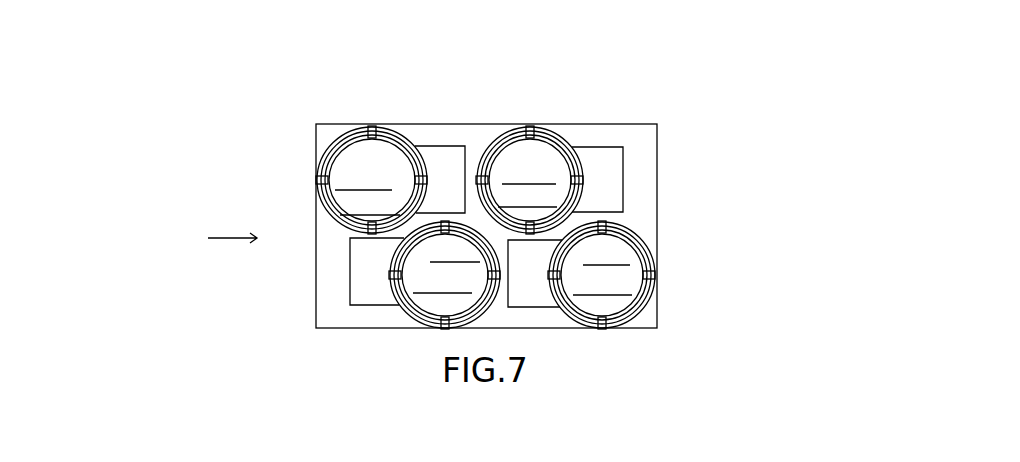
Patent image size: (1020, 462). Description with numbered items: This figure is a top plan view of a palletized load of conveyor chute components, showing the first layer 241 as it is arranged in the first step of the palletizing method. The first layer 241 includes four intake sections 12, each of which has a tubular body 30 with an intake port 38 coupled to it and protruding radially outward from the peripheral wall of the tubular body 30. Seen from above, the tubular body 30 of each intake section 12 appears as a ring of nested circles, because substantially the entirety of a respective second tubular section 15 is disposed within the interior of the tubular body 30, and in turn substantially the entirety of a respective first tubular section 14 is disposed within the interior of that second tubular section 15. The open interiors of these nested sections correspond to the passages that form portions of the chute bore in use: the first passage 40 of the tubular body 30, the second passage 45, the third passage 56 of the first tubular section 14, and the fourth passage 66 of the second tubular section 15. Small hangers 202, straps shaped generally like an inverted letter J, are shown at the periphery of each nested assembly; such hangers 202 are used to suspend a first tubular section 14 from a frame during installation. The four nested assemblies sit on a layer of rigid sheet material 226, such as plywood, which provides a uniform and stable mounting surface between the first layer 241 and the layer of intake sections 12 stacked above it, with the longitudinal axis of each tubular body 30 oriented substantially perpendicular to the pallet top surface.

The intake section 12 is at (327, 145).
The first tubular section 14 is at (320, 167).
The second tubular section 15 is at (328, 157).
The tubular body 30 is at (402, 130).
The intake port 38 is at (454, 188).
The first passage 40 is at (482, 216).
The second passage 45 is at (495, 215).
The third passage 56 is at (486, 243).
The fourth passage 66 is at (496, 243).
The hanger 202 is at (373, 127).
The rigid sheet material 226 is at (643, 175).
The first layer 241 is at (198, 240).